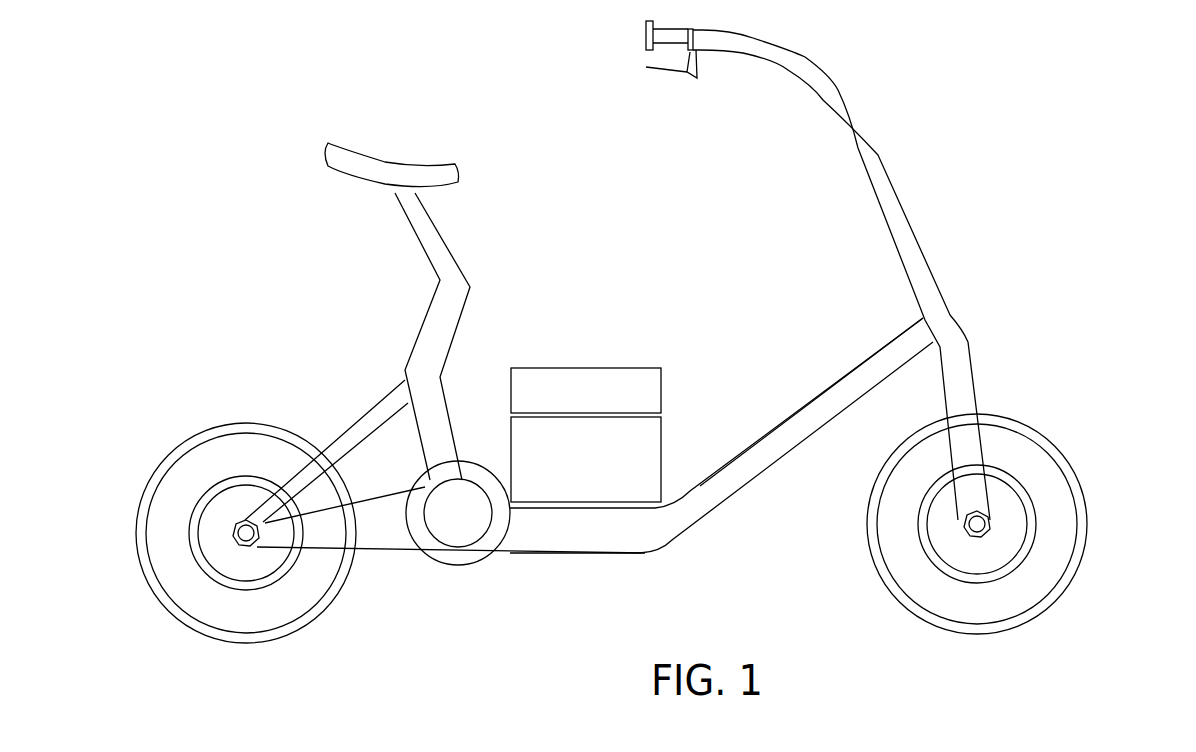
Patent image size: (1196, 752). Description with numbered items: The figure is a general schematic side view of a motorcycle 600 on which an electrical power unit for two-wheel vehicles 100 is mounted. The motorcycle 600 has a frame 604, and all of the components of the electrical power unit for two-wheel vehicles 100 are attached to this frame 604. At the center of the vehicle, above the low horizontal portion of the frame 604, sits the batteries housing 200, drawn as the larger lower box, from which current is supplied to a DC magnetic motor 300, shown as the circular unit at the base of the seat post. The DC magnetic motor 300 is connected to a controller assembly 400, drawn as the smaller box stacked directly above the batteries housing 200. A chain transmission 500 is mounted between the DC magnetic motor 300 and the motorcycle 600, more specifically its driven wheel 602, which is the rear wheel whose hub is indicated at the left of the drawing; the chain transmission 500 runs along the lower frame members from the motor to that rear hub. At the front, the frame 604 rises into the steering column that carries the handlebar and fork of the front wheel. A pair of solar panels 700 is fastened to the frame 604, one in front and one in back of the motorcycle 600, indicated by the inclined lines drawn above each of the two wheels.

The electrical power unit for two-wheel vehicles 100 is at (528, 343).
The batteries housing 200 is at (650, 462).
The DC magnetic motor 300 is at (463, 527).
The controller assembly 400 is at (638, 393).
The chain transmission 500 is at (382, 550).
The motorcycle 600 is at (910, 151).
The driven wheel 602 is at (245, 533).
The frame 604 is at (774, 447).
The solar panels 700 is at (245, 533).